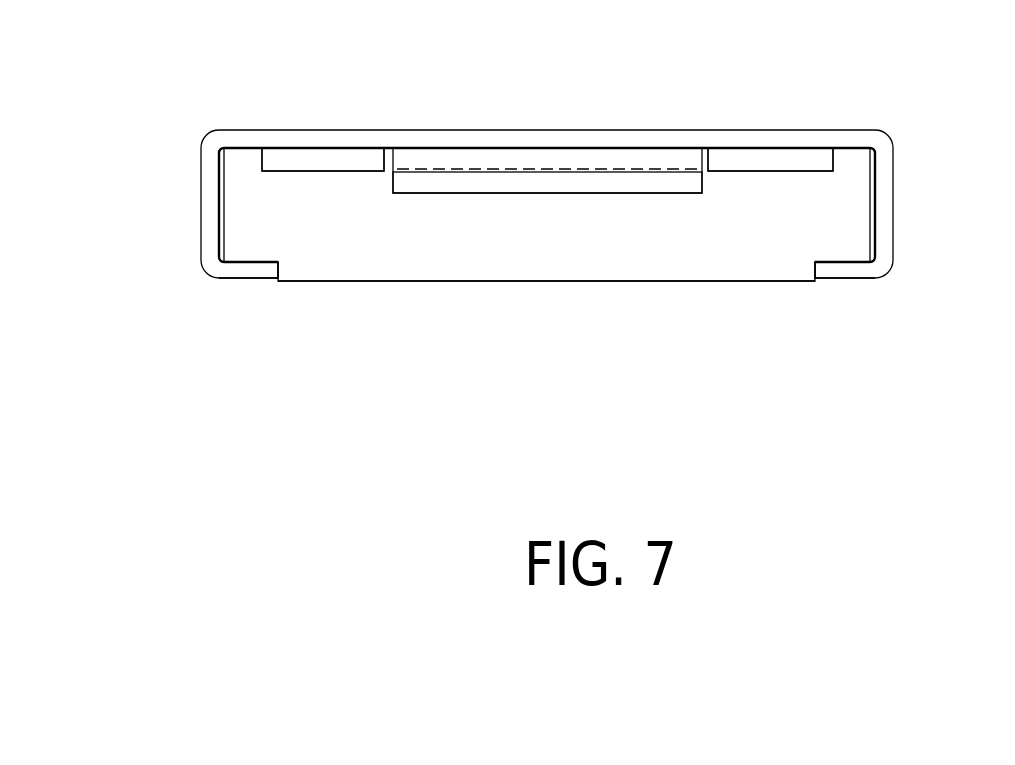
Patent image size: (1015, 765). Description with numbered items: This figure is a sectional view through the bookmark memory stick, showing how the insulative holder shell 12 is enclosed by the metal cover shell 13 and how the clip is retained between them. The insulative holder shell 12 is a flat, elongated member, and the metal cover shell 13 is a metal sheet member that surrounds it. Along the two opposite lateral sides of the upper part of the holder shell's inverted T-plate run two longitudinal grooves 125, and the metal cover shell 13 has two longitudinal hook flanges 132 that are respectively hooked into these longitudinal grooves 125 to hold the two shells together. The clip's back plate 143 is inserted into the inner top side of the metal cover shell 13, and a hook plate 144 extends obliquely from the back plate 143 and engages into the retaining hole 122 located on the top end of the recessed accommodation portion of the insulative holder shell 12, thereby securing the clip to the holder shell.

The insulative holder shell 12 is at (665, 236).
The metal cover shell 13 is at (331, 140).
The retaining hole 122 is at (484, 193).
The longitudinal grooves 125 is at (256, 262).
The longitudinal hook flanges 132 is at (253, 270).
The back plate 143 is at (371, 160).
The hook plate 144 is at (594, 185).